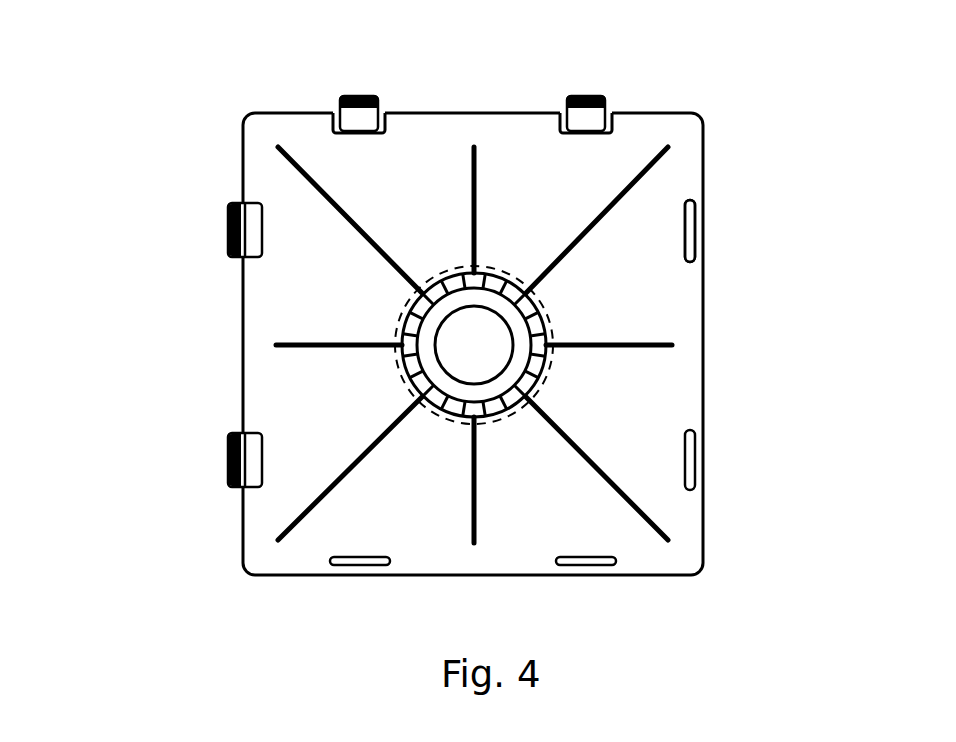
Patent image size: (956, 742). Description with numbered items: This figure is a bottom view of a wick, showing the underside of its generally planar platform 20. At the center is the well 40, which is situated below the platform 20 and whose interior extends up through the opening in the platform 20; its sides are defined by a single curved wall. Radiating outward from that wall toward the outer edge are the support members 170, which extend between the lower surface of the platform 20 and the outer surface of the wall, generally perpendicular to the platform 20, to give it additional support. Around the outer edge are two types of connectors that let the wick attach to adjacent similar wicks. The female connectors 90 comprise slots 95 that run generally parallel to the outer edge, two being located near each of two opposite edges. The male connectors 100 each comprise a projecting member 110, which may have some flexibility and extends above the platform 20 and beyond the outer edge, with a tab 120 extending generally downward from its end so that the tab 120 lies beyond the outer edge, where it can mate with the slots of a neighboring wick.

The platform 20 is at (653, 556).
The well 40 is at (489, 357).
The female connectors 90 is at (722, 195).
The slots 95 is at (683, 230).
The male connectors 100 is at (218, 197).
The projecting member 110 is at (355, 121).
The tab 120 is at (358, 96).
The support members 170 is at (345, 233).